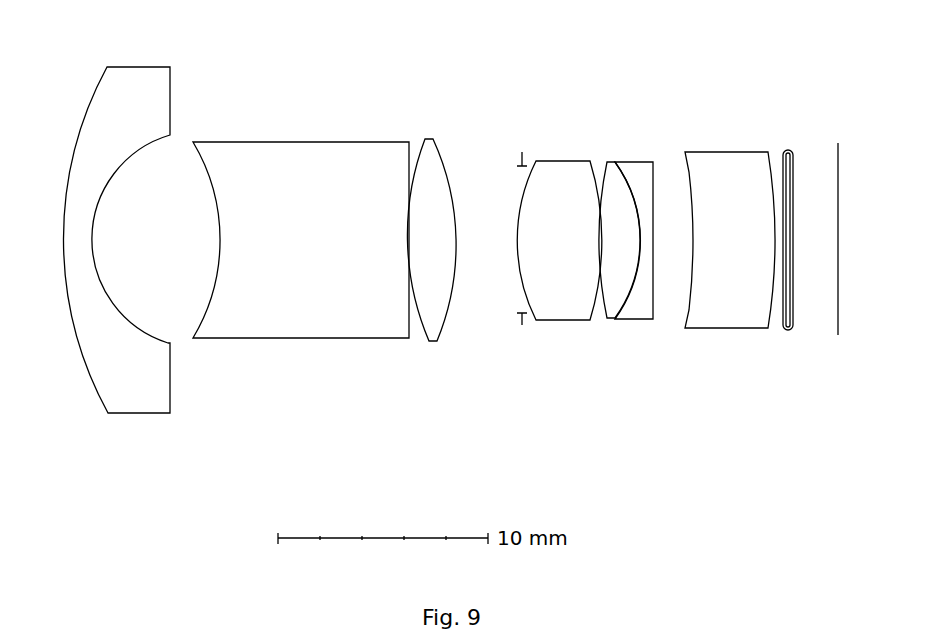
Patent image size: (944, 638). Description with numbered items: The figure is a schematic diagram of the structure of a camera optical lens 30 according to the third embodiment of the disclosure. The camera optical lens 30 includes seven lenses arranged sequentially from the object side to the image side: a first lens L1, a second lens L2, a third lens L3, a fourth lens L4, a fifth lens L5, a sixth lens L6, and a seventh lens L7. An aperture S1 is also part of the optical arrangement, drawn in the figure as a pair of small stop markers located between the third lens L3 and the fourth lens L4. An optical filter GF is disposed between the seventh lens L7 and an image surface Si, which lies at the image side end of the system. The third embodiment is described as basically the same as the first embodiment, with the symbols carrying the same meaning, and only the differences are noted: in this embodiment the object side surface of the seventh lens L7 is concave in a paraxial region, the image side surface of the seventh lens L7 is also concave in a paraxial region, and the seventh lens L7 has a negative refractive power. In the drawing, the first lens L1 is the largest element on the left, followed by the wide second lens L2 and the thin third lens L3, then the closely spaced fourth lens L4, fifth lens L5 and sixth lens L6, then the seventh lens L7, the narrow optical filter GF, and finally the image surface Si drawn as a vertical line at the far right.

The camera optical lens 30 is at (473, 33).
The first lens L1 is at (116, 220).
The second lens L2 is at (301, 226).
The third lens L3 is at (431, 224).
The aperture S1 is at (520, 228).
The fourth lens L4 is at (559, 224).
The fifth lens L5 is at (614, 223).
The sixth lens L6 is at (634, 224).
The seventh lens L7 is at (730, 219).
The optical filter GF is at (783, 218).
The image surface Si is at (841, 216).